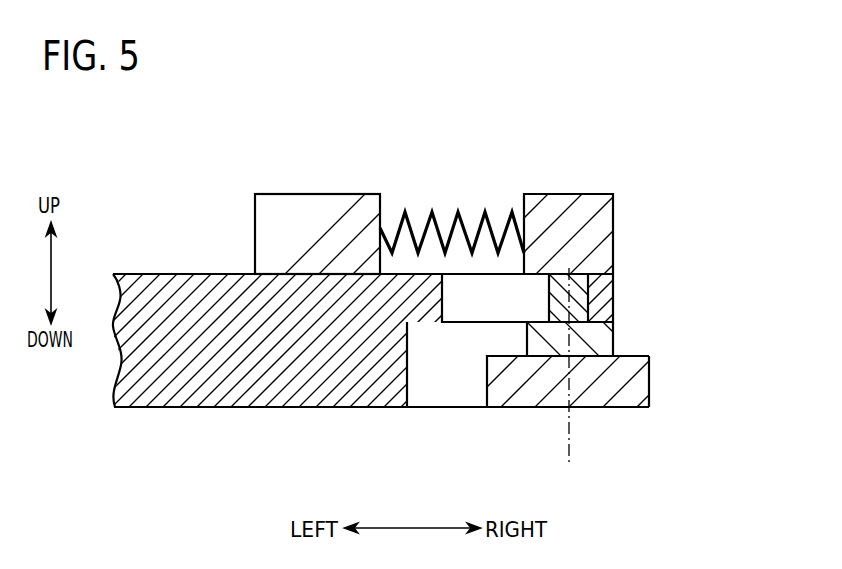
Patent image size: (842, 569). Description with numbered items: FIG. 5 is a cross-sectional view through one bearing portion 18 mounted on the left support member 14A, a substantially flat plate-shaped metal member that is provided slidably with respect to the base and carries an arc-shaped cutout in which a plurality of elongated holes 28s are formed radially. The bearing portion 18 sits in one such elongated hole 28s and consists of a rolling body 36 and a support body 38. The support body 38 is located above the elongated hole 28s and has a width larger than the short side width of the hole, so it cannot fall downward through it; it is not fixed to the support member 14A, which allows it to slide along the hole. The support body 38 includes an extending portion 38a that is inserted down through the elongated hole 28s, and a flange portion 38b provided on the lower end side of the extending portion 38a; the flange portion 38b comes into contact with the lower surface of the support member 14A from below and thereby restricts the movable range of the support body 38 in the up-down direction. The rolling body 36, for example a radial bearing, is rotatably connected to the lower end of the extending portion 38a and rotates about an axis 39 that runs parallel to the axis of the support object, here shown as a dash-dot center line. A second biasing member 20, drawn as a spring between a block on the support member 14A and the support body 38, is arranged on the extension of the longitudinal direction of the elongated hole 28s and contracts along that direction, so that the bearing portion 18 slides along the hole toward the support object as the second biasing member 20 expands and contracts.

The left support member 14A is at (309, 400).
The bearing portion 18 is at (617, 231).
The second biasing member 20 is at (437, 227).
The elongated hole 28s is at (452, 387).
The rolling body 36 is at (612, 393).
The support body 38 is at (585, 205).
The extending portion 38a is at (580, 303).
The flange portion 38b is at (595, 340).
The axis 39 is at (569, 440).